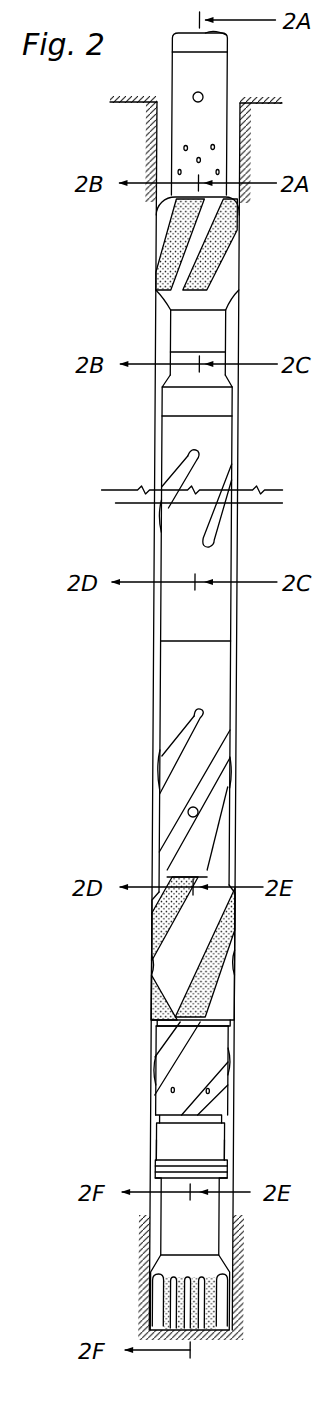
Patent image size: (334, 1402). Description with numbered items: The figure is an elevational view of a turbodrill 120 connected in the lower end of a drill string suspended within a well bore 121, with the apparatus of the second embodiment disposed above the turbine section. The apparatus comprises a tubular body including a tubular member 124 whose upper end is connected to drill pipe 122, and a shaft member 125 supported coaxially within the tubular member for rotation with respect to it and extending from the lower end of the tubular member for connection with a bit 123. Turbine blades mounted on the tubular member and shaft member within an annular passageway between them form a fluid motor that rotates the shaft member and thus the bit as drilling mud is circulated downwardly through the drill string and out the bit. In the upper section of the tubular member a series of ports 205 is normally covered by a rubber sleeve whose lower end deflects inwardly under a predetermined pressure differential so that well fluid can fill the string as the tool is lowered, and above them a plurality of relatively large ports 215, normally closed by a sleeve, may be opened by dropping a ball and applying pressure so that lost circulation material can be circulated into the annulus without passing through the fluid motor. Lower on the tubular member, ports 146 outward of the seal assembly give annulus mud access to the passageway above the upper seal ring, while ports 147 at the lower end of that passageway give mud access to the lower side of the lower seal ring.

The turbodrill 120 is at (152, 668).
The well bore 121 is at (242, 664).
The drill pipe 122 is at (229, 40).
The bit 123 is at (229, 1291).
The tubular member 124 is at (243, 540).
The shaft member 125 is at (235, 1186).
The ports 146 is at (204, 812).
The ports 147 is at (217, 1091).
The ports 205 is at (216, 147).
The ports 215 is at (204, 95).